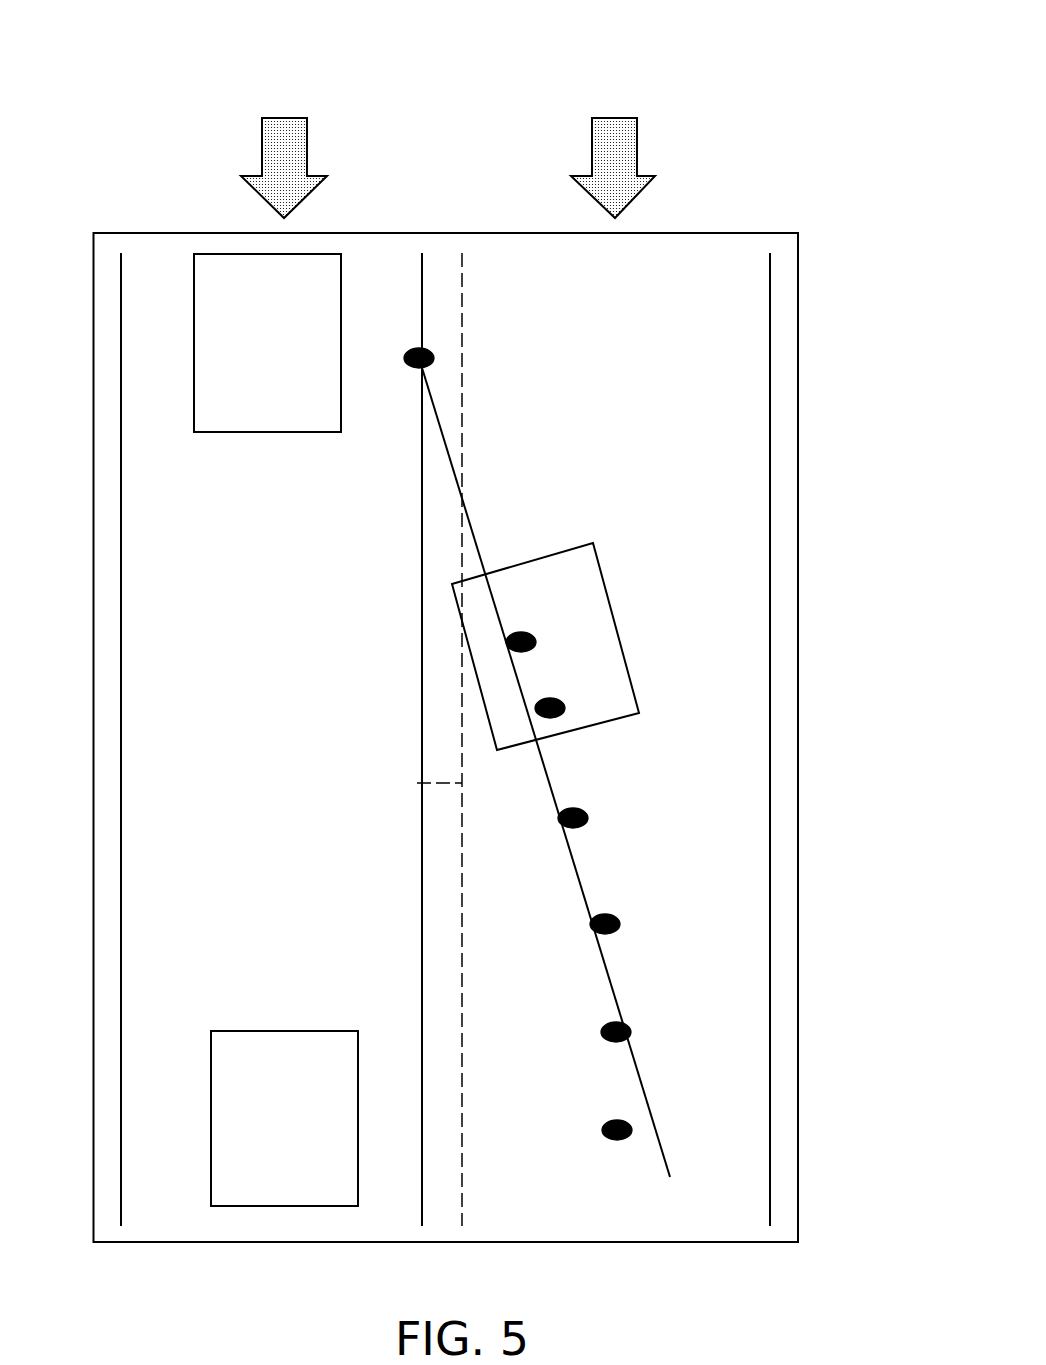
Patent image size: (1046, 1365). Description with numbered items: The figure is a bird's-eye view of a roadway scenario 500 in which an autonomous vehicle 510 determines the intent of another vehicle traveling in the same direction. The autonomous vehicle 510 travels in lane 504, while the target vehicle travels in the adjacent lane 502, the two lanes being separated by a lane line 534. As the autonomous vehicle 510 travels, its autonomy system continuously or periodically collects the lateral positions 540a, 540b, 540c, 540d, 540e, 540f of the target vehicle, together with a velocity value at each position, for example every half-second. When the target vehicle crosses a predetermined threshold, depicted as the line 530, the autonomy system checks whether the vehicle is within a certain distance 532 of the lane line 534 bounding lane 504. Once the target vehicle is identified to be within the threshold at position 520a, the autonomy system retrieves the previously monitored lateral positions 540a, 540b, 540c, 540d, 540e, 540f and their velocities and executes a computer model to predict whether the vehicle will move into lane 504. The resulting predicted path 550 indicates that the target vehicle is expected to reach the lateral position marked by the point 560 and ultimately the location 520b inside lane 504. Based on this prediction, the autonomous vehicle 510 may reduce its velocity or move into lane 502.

The roadway scenario 500 is at (812, 81).
The lane 502 is at (615, 117).
The lane 504 is at (285, 117).
The autonomous vehicle 510 is at (264, 1135).
The position 520a is at (522, 562).
The location 520b is at (249, 344).
The line 530 is at (470, 412).
The distance 532 is at (441, 790).
The lane line 534 is at (410, 582).
The lateral position 540a is at (612, 1142).
The lateral position 540b is at (628, 1030).
The lateral position 540c is at (616, 920).
The lateral position 540d is at (586, 811).
The lateral position 540e is at (562, 700).
The lateral position 540f is at (534, 636).
The path 550 is at (485, 508).
The point 560 is at (440, 345).